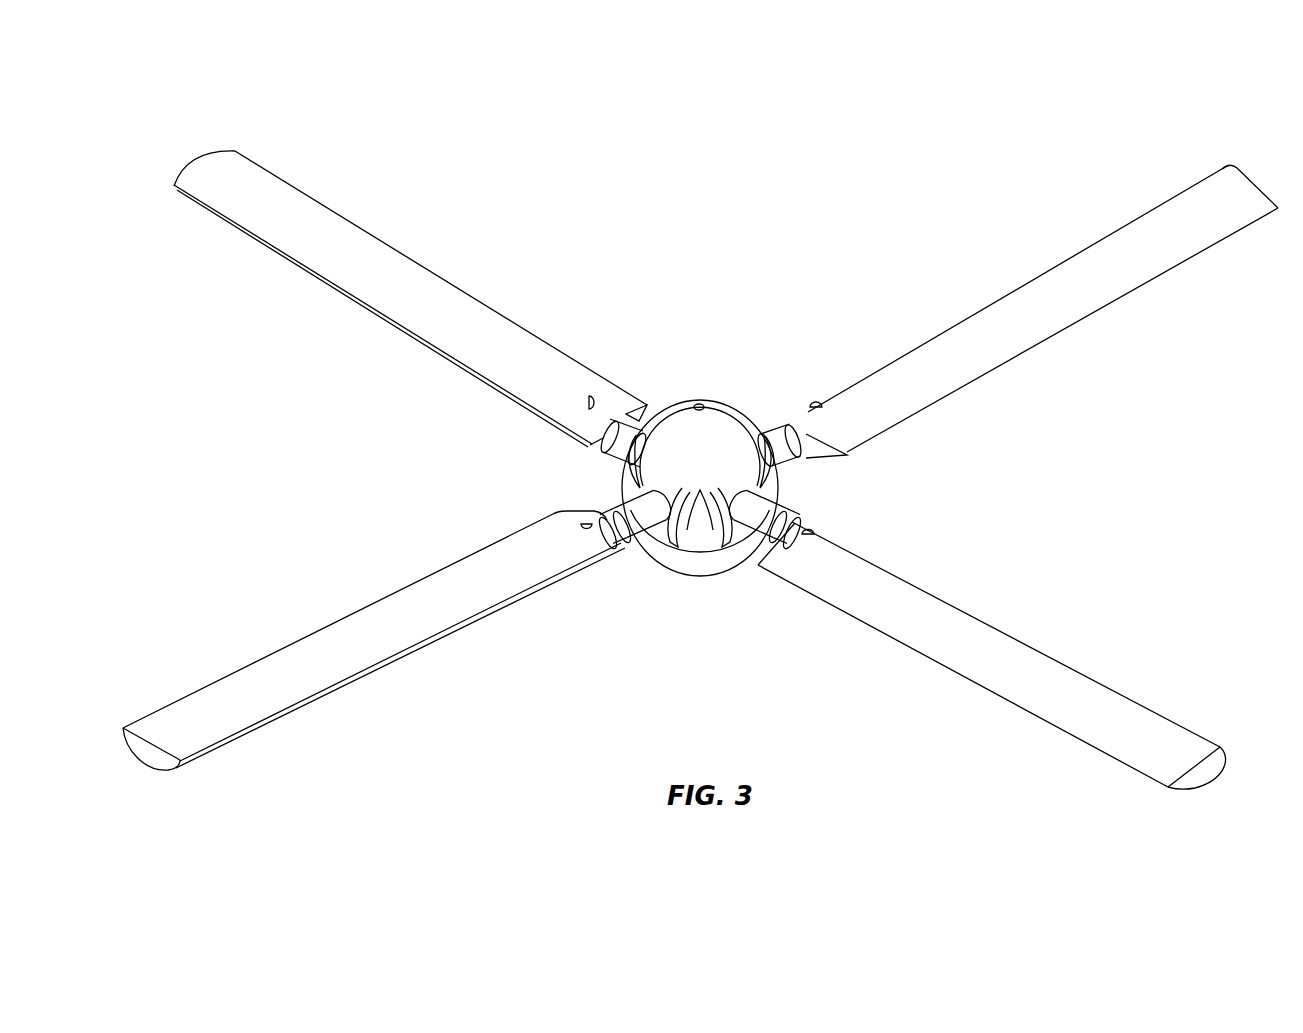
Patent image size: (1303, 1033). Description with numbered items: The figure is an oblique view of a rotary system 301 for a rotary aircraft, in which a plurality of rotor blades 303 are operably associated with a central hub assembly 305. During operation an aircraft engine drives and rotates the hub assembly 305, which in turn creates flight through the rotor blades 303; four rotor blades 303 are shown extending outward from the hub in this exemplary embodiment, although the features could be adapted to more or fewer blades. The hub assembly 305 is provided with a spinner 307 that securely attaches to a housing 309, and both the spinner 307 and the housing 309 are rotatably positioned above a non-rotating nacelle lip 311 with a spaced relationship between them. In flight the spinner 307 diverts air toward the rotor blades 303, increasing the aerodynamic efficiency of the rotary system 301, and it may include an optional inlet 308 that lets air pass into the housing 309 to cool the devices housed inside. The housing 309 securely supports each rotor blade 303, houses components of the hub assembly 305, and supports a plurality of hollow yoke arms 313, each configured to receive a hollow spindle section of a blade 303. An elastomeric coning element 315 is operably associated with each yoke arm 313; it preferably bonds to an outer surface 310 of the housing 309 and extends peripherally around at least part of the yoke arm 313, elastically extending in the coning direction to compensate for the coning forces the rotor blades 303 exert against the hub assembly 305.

The rotary system 301 is at (213, 84).
The rotor blade 303 is at (940, 668).
The hub assembly 305 is at (555, 470).
The spinner 307 is at (727, 398).
The inlet 308 is at (697, 404).
The housing 309 is at (708, 555).
The outer surface 310 is at (690, 538).
The nacelle lip 311 is at (669, 547).
The yoke arm 313 is at (770, 511).
The elastomeric coning element 315 is at (783, 482).